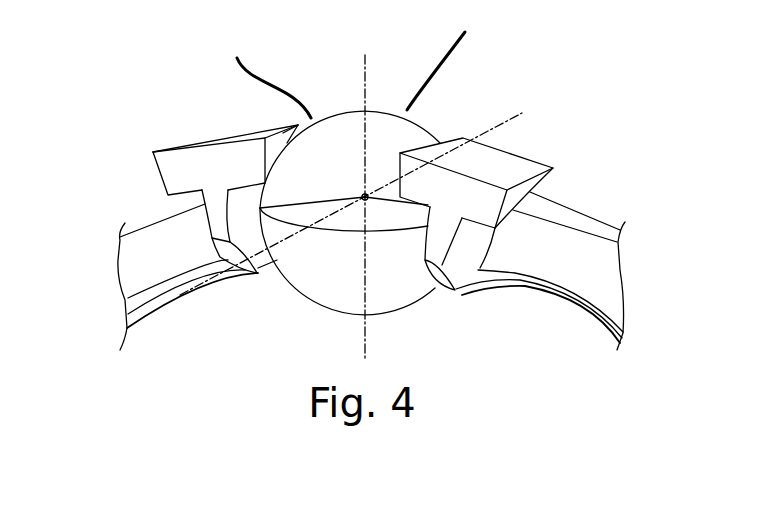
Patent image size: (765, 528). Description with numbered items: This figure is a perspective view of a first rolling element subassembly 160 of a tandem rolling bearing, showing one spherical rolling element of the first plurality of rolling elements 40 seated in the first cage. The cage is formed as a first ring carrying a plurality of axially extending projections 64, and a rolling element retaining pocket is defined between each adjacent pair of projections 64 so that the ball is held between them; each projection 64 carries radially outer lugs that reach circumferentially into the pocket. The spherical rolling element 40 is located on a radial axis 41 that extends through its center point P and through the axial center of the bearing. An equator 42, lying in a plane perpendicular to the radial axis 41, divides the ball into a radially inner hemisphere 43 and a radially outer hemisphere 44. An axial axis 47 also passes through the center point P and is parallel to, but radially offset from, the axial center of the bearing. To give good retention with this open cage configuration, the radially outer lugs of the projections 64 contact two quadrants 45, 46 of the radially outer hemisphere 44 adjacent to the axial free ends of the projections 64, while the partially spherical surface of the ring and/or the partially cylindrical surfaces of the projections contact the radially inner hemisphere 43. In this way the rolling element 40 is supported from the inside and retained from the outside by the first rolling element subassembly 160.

The first plurality of rolling elements 40 is at (421, 115).
The radial axis 41 is at (366, 90).
The equator 42 is at (293, 220).
The radially inner hemisphere 43 is at (297, 287).
The radially outer hemisphere 44 is at (313, 118).
The quadrant 45 is at (264, 74).
The quadrant 46 is at (446, 57).
The axial axis 47 is at (520, 108).
The axially extending projection 64 is at (200, 137).
The first rolling element subassembly 160 is at (559, 198).
The center point P is at (363, 195).